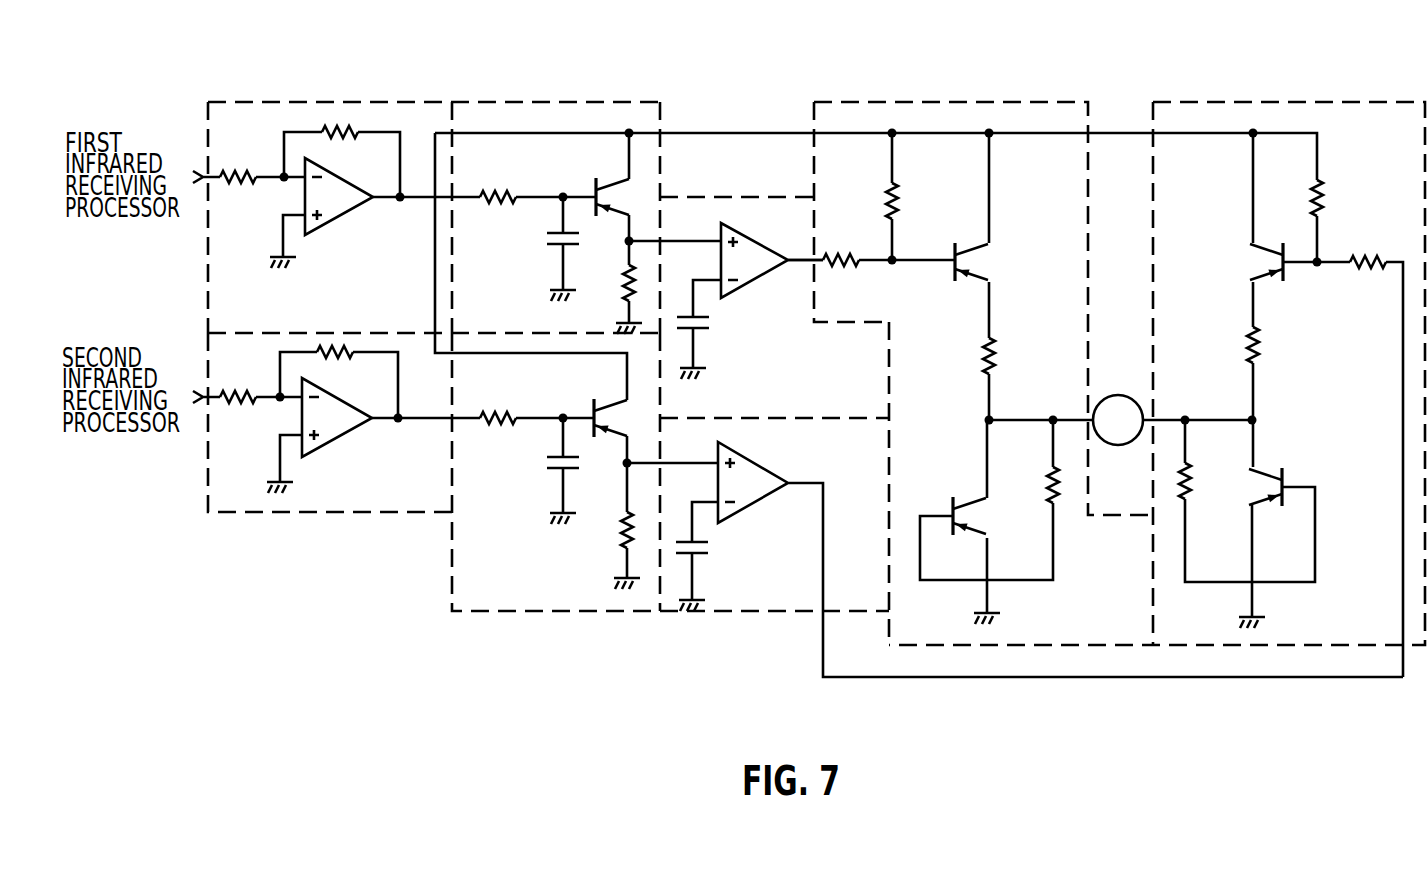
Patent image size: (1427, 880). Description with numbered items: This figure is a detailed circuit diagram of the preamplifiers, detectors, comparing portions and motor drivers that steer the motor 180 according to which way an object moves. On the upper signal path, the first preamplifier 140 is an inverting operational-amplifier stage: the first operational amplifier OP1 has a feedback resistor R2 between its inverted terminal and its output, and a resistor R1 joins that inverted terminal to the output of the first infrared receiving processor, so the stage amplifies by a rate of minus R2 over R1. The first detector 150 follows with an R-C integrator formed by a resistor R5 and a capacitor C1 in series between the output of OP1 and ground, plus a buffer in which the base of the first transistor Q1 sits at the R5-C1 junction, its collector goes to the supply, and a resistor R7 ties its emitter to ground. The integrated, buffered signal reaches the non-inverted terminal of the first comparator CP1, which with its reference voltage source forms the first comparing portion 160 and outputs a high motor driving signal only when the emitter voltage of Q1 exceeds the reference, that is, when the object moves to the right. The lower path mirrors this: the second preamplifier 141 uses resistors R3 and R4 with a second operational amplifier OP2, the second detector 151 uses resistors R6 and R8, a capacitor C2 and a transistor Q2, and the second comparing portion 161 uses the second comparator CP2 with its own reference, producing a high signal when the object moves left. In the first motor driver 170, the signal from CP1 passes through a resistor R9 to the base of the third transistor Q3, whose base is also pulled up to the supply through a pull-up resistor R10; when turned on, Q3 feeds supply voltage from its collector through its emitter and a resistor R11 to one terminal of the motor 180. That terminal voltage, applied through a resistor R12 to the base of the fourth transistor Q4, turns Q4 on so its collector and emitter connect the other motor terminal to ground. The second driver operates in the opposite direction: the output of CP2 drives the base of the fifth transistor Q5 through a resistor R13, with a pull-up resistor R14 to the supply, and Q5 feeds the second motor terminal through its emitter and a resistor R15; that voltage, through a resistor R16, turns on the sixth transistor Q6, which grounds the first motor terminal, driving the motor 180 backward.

The first preamplifier 140 is at (396, 102).
The second preamplifier 141 is at (330, 512).
The first detector 150 is at (566, 102).
The second detector 151 is at (562, 612).
The first comparing portion 160 is at (748, 197).
The second comparing portion 161 is at (748, 611).
The first motor driver 170 is at (997, 102).
The motor 180 is at (1118, 395).
The resistor R1 is at (262, 164).
The feedback resistor R2 is at (342, 149).
The resistor R3 is at (261, 384).
The resistor R4 is at (339, 382).
The resistor R5 is at (538, 184).
The resistor R6 is at (537, 406).
The resistor R7 is at (616, 287).
The resistor R8 is at (612, 526).
The resistor R9 is at (840, 248).
The pull-up resistor R10 is at (914, 196).
The resistor R11 is at (1008, 379).
The resistor R12 is at (989, 500).
The resistor R13 is at (1360, 454).
The pull-up resistor R14 is at (1310, 197).
The resistor R15 is at (1232, 397).
The resistor R16 is at (1247, 501).
The capacitor C1 is at (549, 249).
The capacitor C2 is at (547, 471).
The first transistor Q1 is at (621, 209).
The transistor Q2 is at (618, 431).
The third transistor Q3 is at (952, 235).
The fourth transistor Q4 is at (977, 522).
The fifth transistor Q5 is at (1268, 230).
The sixth transistor Q6 is at (1262, 548).
The first operational amplifier OP1 is at (375, 213).
The second operational amplifier OP2 is at (373, 435).
The first comparator CP1 is at (726, 301).
The second comparator CP2 is at (1015, 559).